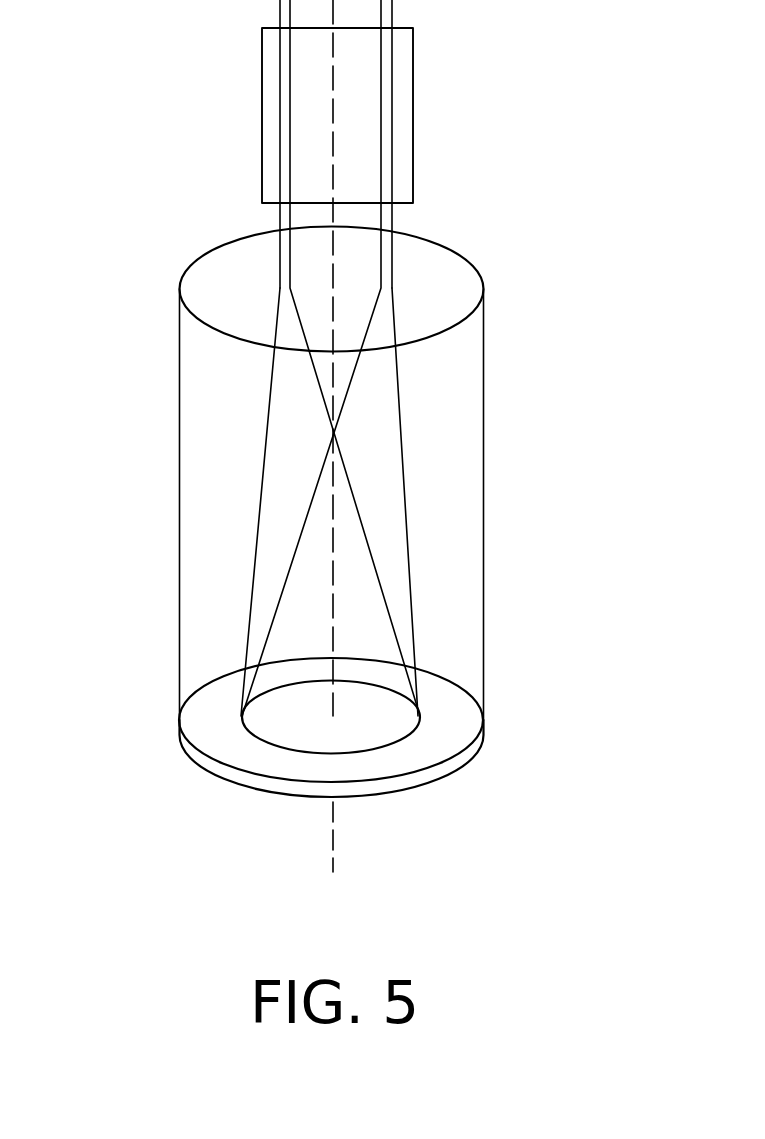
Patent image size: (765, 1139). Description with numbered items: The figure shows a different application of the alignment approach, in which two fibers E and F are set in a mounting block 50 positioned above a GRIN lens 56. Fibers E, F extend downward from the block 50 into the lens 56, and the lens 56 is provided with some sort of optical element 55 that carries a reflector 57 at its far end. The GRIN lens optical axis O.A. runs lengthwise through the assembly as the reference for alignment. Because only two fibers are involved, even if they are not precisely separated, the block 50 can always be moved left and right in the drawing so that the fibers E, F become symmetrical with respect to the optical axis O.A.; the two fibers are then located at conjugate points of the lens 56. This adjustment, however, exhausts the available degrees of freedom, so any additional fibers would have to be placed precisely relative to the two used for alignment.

The mounting block 50 is at (262, 78).
The GRIN lens optical axis O.A. is at (333, 108).
The fiber E is at (280, 223).
The fiber F is at (392, 223).
The GRIN lens 56 is at (405, 473).
The optical element 55 is at (179, 737).
The reflector 57 is at (483, 723).